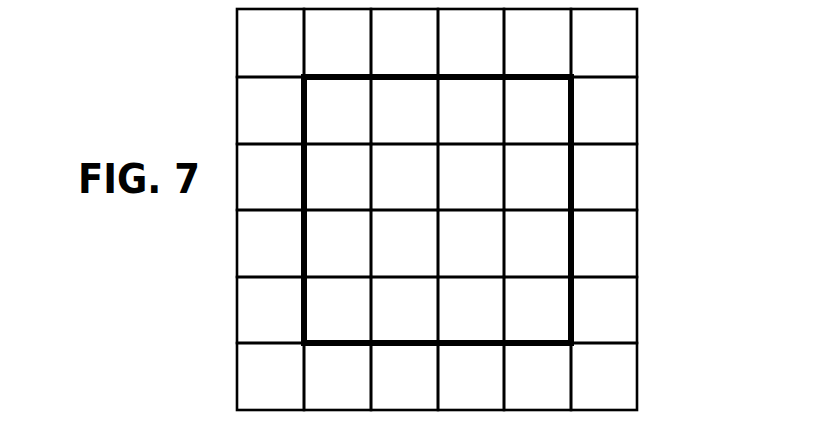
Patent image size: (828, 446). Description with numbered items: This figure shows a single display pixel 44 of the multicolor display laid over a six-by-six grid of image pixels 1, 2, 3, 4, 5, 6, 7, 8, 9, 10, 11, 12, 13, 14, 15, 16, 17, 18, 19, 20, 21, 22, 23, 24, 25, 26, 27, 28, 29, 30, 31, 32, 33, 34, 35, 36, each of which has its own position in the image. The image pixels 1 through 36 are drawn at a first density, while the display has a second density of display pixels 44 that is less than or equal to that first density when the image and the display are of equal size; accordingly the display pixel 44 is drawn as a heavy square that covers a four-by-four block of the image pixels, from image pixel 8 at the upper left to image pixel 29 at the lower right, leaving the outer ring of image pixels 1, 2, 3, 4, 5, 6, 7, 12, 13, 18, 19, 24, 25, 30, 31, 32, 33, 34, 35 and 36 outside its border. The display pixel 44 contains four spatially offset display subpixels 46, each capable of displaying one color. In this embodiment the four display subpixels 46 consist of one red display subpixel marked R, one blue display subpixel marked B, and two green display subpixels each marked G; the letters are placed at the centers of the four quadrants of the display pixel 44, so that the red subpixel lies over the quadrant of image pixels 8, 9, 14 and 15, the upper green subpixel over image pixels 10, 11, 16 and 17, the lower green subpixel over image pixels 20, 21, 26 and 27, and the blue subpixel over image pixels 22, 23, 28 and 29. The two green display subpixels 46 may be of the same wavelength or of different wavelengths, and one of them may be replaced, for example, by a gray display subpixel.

The display pixel 44 is at (575, 100).
The display subpixel 46 is at (550, 329).
The image pixel 1 is at (270, 43).
The image pixel 2 is at (337, 43).
The image pixel 3 is at (404, 43).
The image pixel 4 is at (471, 43).
The image pixel 5 is at (537, 43).
The image pixel 6 is at (604, 43).
The image pixel 7 is at (270, 110).
The image pixel 8 is at (337, 110).
The image pixel 9 is at (404, 110).
The image pixel 10 is at (471, 110).
The image pixel 11 is at (537, 110).
The image pixel 12 is at (604, 110).
The image pixel 13 is at (270, 177).
The image pixel 14 is at (337, 177).
The image pixel 15 is at (404, 177).
The image pixel 16 is at (471, 177).
The image pixel 17 is at (537, 177).
The image pixel 18 is at (604, 177).
The image pixel 19 is at (270, 243).
The image pixel 20 is at (337, 243).
The image pixel 21 is at (404, 243).
The image pixel 22 is at (471, 243).
The image pixel 23 is at (537, 243).
The image pixel 24 is at (604, 243).
The image pixel 25 is at (270, 310).
The image pixel 26 is at (337, 310).
The image pixel 27 is at (404, 310).
The image pixel 28 is at (471, 310).
The image pixel 29 is at (537, 310).
The image pixel 30 is at (604, 310).
The image pixel 31 is at (270, 376).
The image pixel 32 is at (337, 376).
The image pixel 33 is at (404, 376).
The image pixel 34 is at (471, 376).
The image pixel 35 is at (537, 376).
The image pixel 36 is at (604, 376).